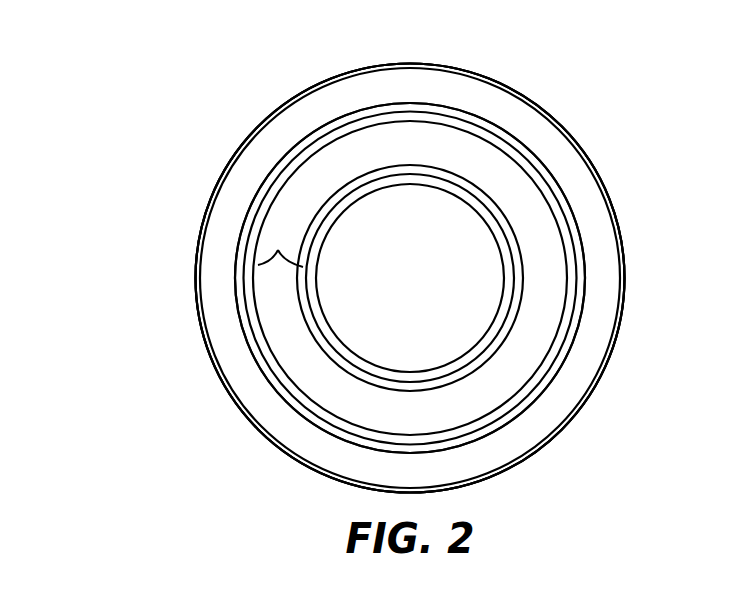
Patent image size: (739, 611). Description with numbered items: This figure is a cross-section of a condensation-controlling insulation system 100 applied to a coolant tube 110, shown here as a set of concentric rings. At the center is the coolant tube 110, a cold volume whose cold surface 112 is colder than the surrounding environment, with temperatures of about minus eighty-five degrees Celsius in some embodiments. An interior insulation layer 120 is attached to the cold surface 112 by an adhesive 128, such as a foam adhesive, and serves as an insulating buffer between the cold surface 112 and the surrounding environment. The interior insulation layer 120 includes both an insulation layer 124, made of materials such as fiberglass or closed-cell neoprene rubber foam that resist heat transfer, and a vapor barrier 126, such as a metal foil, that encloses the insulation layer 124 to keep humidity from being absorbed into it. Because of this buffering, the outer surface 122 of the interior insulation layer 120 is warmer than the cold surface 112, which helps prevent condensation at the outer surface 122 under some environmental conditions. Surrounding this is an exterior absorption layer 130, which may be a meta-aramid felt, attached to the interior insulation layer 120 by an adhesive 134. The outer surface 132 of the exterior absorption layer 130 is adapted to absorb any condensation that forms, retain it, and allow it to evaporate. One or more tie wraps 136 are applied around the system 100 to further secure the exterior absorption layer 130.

The condensation-controlling insulation system 100 is at (147, 64).
The coolant tube 110 is at (333, 212).
The cold surface 112 is at (524, 227).
The interior insulation layer 120 is at (278, 250).
The outer surface of interior insulation layer 122 is at (566, 181).
The insulation layer 124 is at (323, 163).
The vapor barrier 126 is at (330, 137).
The adhesive 128 is at (422, 167).
The exterior absorption layer 130 is at (324, 94).
The outer surface of exterior absorption layer 132 is at (585, 132).
The adhesive 134 is at (468, 116).
The tie wraps 136 is at (589, 398).